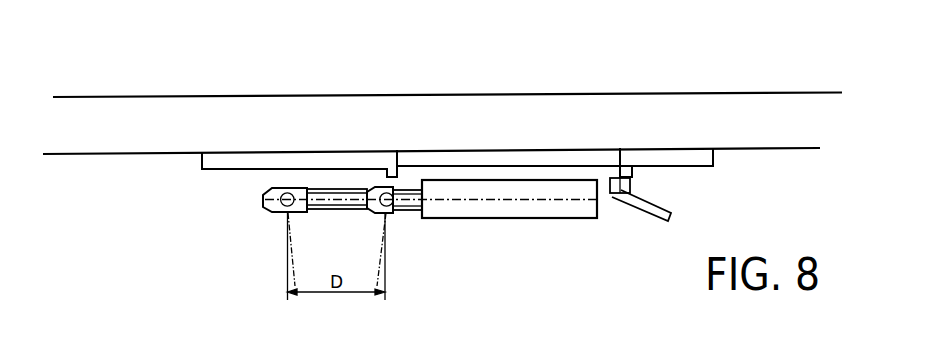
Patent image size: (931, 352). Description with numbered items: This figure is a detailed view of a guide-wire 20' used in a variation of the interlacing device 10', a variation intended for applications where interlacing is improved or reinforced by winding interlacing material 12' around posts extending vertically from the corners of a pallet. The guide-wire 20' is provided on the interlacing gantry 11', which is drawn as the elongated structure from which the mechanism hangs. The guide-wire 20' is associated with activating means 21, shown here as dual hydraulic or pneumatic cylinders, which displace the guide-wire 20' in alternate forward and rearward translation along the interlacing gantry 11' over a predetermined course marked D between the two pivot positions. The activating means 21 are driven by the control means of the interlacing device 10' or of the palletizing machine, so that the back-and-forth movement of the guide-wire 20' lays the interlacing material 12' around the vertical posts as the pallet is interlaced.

The interlacing device 10' is at (442, 77).
The interlacing gantry 11' is at (457, 89).
The interlacing material 12' is at (356, 151).
The guide-wire 20' is at (289, 151).
The activating means 21 is at (537, 193).